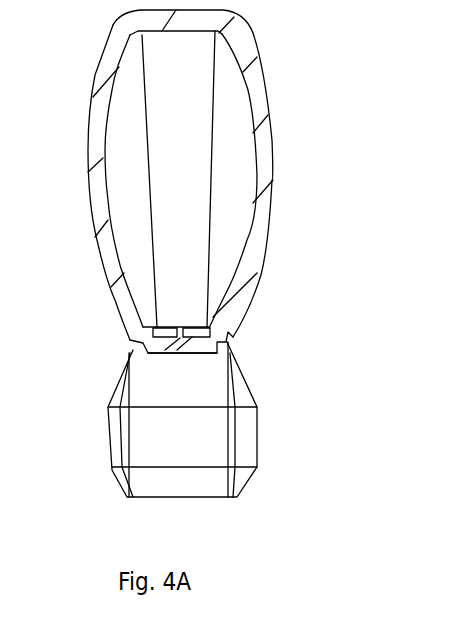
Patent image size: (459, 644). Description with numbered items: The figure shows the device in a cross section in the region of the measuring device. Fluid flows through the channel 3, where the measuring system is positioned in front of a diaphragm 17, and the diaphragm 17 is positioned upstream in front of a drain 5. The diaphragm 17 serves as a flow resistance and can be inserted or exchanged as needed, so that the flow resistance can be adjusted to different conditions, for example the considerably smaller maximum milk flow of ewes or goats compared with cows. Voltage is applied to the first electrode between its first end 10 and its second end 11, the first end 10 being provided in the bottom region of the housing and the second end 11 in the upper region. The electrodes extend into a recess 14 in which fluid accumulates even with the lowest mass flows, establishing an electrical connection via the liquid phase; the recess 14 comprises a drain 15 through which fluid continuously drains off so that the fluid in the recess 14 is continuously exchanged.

The second end 11 is at (253, 25).
The channel 3 is at (245, 153).
The diaphragm 17 is at (145, 163).
The recess 14 is at (180, 320).
The first end 10 is at (218, 323).
The drain 15 is at (150, 355).
The drain 5 is at (183, 423).